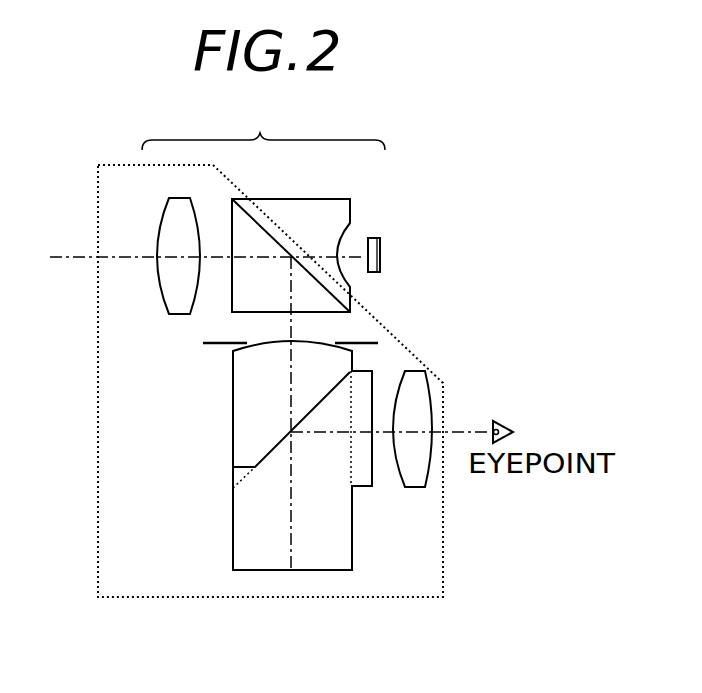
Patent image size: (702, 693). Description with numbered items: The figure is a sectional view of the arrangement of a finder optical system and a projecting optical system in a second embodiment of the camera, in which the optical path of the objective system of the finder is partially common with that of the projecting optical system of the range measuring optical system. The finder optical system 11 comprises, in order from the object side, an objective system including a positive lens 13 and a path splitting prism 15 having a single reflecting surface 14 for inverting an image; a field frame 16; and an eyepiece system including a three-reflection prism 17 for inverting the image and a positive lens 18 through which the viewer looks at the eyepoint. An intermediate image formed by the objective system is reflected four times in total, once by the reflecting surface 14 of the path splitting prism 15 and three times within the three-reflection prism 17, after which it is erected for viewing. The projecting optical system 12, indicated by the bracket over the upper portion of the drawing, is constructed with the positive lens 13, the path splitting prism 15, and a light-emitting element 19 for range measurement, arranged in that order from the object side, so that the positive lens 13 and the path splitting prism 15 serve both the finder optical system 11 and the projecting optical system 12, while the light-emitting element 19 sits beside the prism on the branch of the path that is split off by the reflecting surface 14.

The finder optical system 11 is at (98, 470).
The projecting optical system 12 is at (263, 127).
The positive lens 13 is at (168, 285).
The reflecting surface 14 is at (258, 225).
The path splitting prism 15 is at (328, 210).
The field frame 16 is at (378, 341).
The three-reflection prism 17 is at (327, 566).
The positive lens 18 is at (418, 397).
The light-emitting element 19 is at (381, 247).